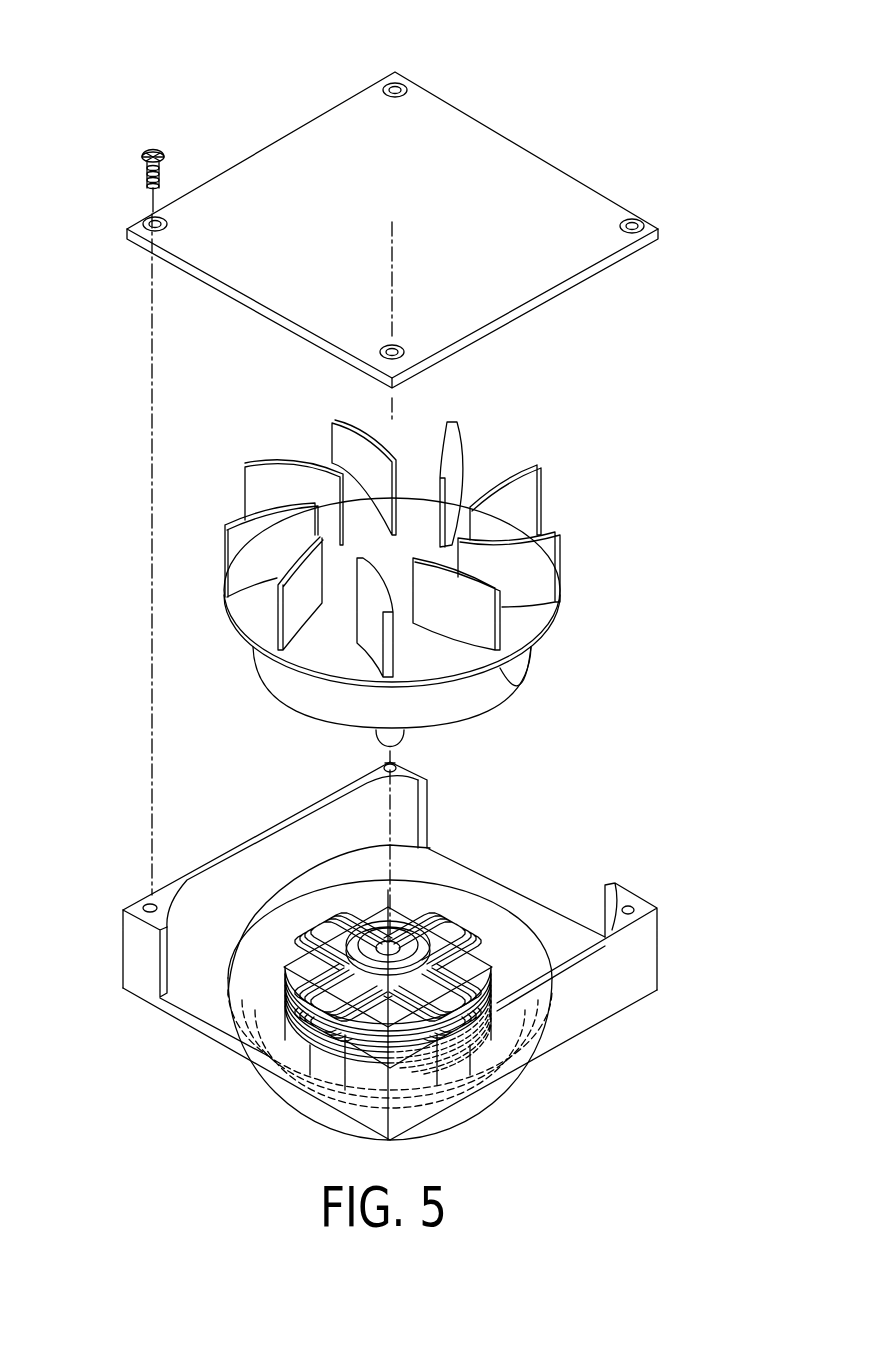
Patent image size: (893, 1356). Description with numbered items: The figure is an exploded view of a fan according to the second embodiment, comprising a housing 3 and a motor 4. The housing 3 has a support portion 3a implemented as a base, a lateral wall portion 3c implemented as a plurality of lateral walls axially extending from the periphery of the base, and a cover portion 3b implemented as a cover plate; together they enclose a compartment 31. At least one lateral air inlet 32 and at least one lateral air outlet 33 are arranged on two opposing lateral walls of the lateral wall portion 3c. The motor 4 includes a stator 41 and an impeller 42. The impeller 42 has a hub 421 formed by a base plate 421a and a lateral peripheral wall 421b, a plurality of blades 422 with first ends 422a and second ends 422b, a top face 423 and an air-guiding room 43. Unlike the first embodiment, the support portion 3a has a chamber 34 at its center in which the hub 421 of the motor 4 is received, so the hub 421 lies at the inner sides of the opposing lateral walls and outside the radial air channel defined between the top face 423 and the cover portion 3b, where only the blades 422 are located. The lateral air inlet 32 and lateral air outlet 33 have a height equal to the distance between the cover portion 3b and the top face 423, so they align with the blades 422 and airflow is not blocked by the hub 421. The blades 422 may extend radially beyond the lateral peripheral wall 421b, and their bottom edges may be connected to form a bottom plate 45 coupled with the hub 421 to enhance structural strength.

The housing 3 is at (149, 110).
The support portion 3a is at (197, 997).
The cover portion 3b is at (240, 172).
The lateral wall portion 3c is at (142, 940).
The motor 4 is at (335, 569).
The compartment 31 is at (350, 956).
The lateral air inlet 32 is at (512, 891).
The lateral air outlet 33 is at (211, 1027).
The chamber 34 is at (534, 956).
The stator 41 is at (460, 920).
The impeller 42 is at (335, 569).
The hub 421 is at (300, 677).
The base plate 421a is at (517, 632).
The lateral peripheral wall 421b is at (503, 670).
The blades 422 is at (233, 545).
The first ends 422a is at (246, 470).
The second ends 422b is at (333, 432).
The top face 423 is at (230, 620).
The air-guiding room 43 is at (421, 534).
The bottom plate 45 is at (467, 672).